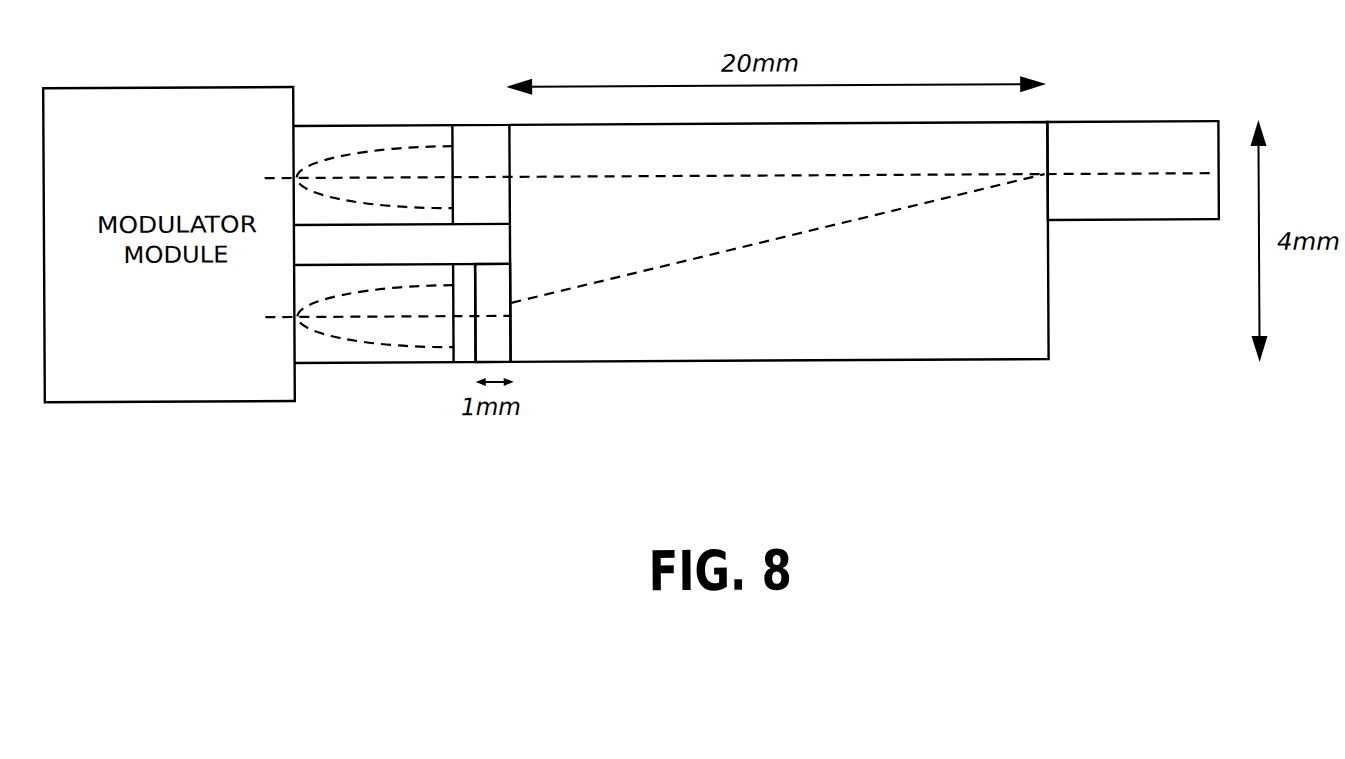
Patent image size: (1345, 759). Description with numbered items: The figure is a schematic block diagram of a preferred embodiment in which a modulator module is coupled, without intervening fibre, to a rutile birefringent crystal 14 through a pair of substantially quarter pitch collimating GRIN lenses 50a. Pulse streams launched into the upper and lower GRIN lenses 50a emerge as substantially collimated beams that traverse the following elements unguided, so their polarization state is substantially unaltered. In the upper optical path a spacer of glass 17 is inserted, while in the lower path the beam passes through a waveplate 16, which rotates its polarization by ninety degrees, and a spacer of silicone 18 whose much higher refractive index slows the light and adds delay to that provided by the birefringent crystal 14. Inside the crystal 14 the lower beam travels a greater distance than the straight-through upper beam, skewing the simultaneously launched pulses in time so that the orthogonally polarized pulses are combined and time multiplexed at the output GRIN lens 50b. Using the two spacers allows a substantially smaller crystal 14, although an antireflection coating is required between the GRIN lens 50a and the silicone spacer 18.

The birefringent crystal 14 is at (783, 363).
The waveplate 16 is at (465, 351).
The glass spacer 17 is at (468, 126).
The silicone spacer 18 is at (493, 342).
The GRIN lens 50a is at (375, 125).
The GRIN lens 50b is at (1108, 125).